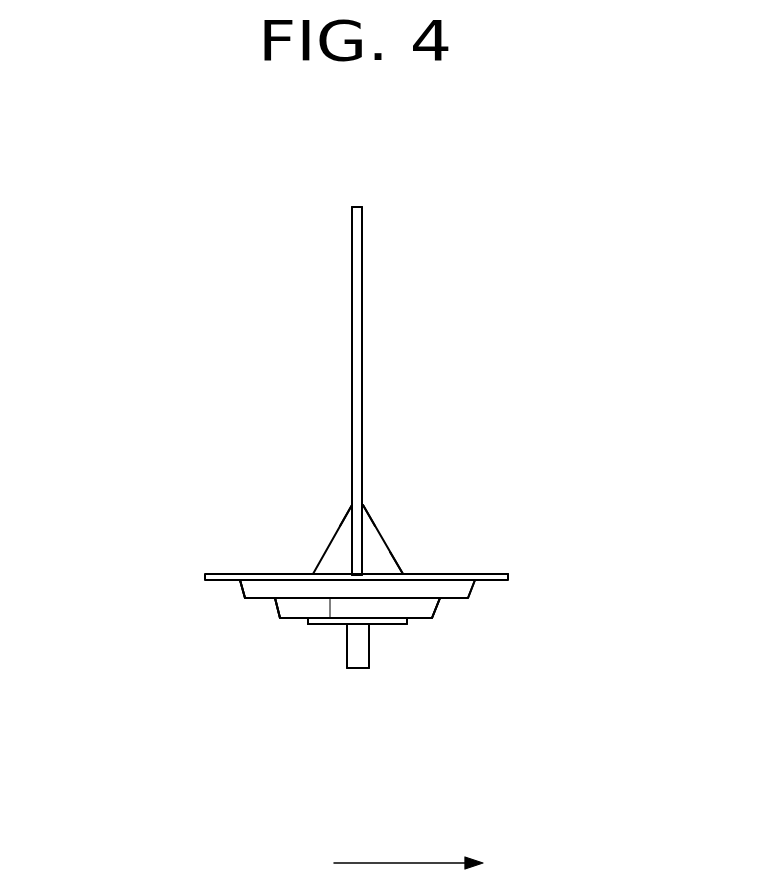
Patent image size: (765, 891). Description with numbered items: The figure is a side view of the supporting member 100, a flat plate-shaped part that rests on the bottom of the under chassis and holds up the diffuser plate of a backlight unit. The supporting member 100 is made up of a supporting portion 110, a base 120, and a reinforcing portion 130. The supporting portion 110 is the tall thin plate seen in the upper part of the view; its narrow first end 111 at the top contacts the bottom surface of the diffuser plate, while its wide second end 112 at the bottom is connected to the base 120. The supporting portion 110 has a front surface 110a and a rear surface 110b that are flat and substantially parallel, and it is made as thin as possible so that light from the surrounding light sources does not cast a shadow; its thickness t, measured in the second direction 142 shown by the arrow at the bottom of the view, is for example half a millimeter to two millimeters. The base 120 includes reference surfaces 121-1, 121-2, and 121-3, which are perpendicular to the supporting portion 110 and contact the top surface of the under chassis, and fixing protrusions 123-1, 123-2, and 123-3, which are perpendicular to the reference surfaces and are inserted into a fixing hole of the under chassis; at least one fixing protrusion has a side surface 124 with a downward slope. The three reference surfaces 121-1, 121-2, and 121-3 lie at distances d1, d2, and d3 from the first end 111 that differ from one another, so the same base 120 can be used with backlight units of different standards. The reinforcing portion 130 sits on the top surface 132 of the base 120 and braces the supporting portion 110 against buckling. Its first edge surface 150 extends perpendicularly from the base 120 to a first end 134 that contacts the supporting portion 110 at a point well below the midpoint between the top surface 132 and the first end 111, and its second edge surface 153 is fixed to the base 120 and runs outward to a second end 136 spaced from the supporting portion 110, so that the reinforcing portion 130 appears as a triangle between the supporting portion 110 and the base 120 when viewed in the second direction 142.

The supporting member 100 is at (435, 172).
The supporting portion 110 is at (355, 247).
The first end 111 is at (352, 205).
The front surface 110a is at (363, 292).
The rear surface 110b is at (352, 292).
The second end 112 is at (355, 568).
The base 120 is at (188, 603).
The reference surface 121-1 is at (283, 612).
The reference surface 121-2 is at (256, 600).
The reference surface 121-3 is at (212, 582).
The fixing protrusion 123-1 is at (388, 624).
The fixing protrusion 123-2 is at (425, 607).
The fixing protrusion 123-3 is at (453, 592).
The side surface 124 is at (308, 625).
The reinforcing portion 130 is at (343, 521).
The top surface 132 is at (494, 573).
The first end 134 is at (363, 505).
The second end 136 is at (405, 573).
The second direction 142 is at (405, 860).
The first edge surface 150 is at (351, 507).
The second edge surface 153 is at (333, 610).
The thickness t is at (362, 200).
The distance d1 is at (410, 618).
The distance d2 is at (478, 598).
The distance d3 is at (365, 206).